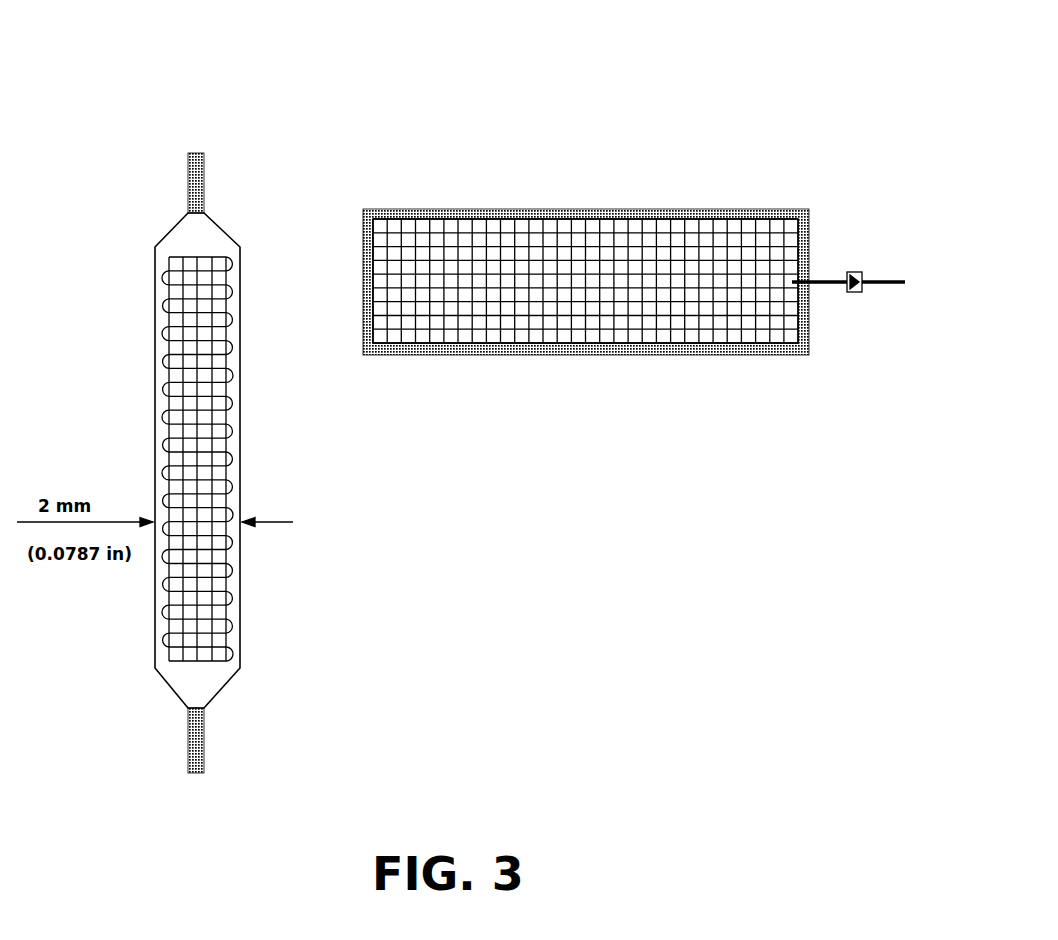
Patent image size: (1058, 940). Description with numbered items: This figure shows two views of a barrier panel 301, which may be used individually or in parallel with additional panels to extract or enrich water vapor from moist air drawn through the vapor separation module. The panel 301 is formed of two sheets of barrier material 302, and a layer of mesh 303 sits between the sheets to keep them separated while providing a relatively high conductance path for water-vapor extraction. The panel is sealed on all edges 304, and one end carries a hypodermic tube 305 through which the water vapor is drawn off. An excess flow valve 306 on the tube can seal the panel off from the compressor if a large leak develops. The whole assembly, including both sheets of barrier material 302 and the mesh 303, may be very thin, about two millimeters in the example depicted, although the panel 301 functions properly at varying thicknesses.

The barrier panel 301 is at (457, 167).
The barrier material 302 is at (248, 293).
The layer of mesh 303 is at (217, 450).
The edges 304 is at (187, 168).
The hypodermic tube 305 is at (808, 274).
The excess flow valve 306 is at (855, 297).